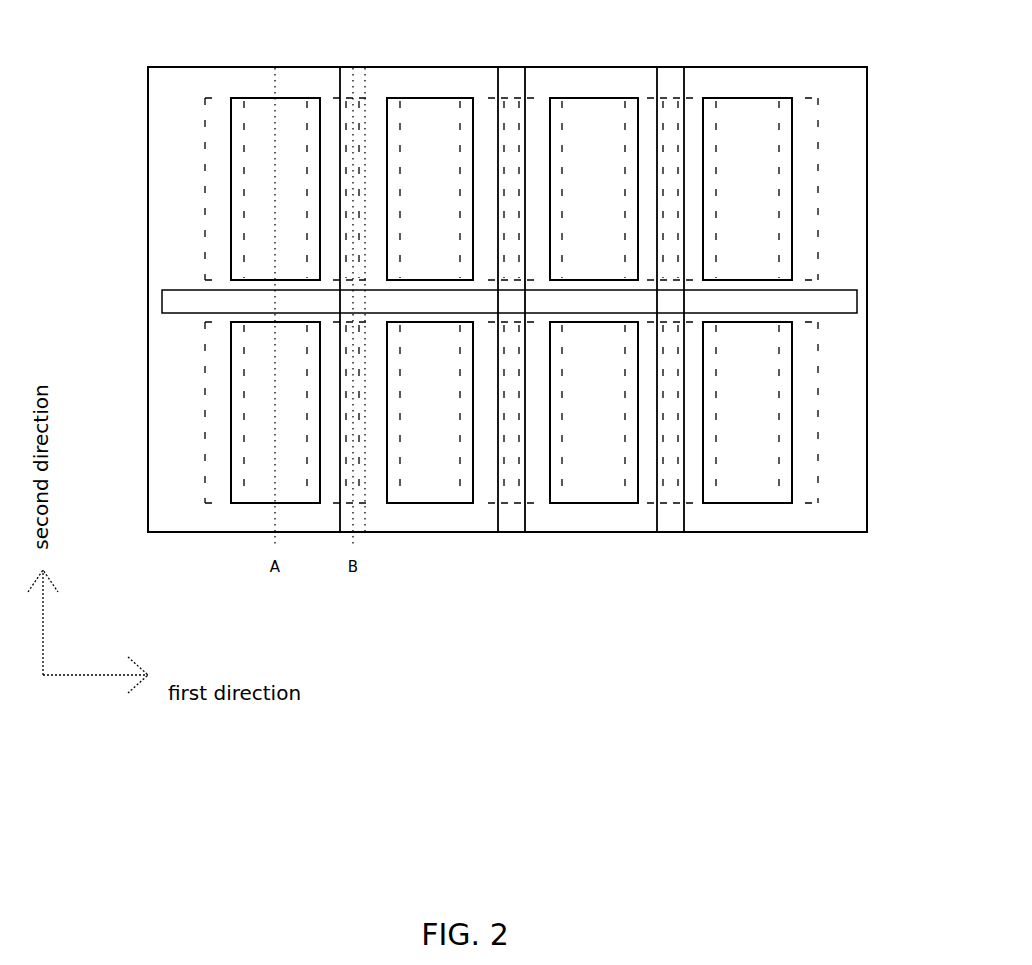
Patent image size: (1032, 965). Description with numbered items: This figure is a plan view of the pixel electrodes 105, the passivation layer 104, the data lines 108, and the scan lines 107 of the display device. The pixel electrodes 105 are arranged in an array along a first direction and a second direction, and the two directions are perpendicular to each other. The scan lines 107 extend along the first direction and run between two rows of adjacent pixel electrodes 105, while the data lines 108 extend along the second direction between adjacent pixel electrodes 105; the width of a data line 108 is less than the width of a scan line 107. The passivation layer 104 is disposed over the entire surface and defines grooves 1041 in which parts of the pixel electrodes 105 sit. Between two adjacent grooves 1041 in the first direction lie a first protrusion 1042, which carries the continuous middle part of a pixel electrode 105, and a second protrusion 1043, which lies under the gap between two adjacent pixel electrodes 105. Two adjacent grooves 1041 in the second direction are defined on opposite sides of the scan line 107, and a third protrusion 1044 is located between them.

The passivation layer 104 is at (173, 216).
The pixel electrode 105 is at (231, 162).
The scan line 107 is at (173, 301).
The data line 108 is at (506, 90).
The groove 1041 is at (210, 97).
The first protrusion 1042 is at (286, 100).
The second protrusion 1043 is at (358, 102).
The third protrusion 1044 is at (800, 281).